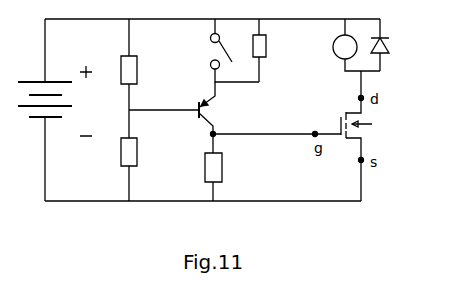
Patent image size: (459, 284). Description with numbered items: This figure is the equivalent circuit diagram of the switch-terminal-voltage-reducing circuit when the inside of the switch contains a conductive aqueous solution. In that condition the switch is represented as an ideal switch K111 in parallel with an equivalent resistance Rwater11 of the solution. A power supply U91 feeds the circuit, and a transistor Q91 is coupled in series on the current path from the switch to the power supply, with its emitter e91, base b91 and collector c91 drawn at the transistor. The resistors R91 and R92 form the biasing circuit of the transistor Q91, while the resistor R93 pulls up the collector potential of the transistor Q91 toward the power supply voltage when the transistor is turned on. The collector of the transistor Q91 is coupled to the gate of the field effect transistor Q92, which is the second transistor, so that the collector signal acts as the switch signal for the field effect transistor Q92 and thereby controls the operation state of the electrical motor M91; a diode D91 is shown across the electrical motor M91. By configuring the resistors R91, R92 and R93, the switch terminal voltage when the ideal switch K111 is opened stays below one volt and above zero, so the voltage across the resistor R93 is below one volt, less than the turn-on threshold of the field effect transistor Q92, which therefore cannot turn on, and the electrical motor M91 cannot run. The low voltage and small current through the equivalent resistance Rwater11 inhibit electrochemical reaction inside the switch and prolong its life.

The battery / power supply U91 is at (57, 101).
The resistor R91 is at (142, 64).
The resistor R92 is at (142, 155).
The resistor R93 is at (228, 167).
The ideal switch K111 is at (215, 50).
The equivalent resistance Rwater11 is at (285, 50).
The transistor Q91 is at (223, 108).
The emitter of transistor Q91 e91 is at (195, 79).
The base of transistor Q91 b91 is at (170, 100).
The collector of transistor Q91 c91 is at (186, 134).
The field effect transistor Q92 is at (373, 136).
The electrical motor M91 is at (337, 45).
The diode D91 is at (396, 45).